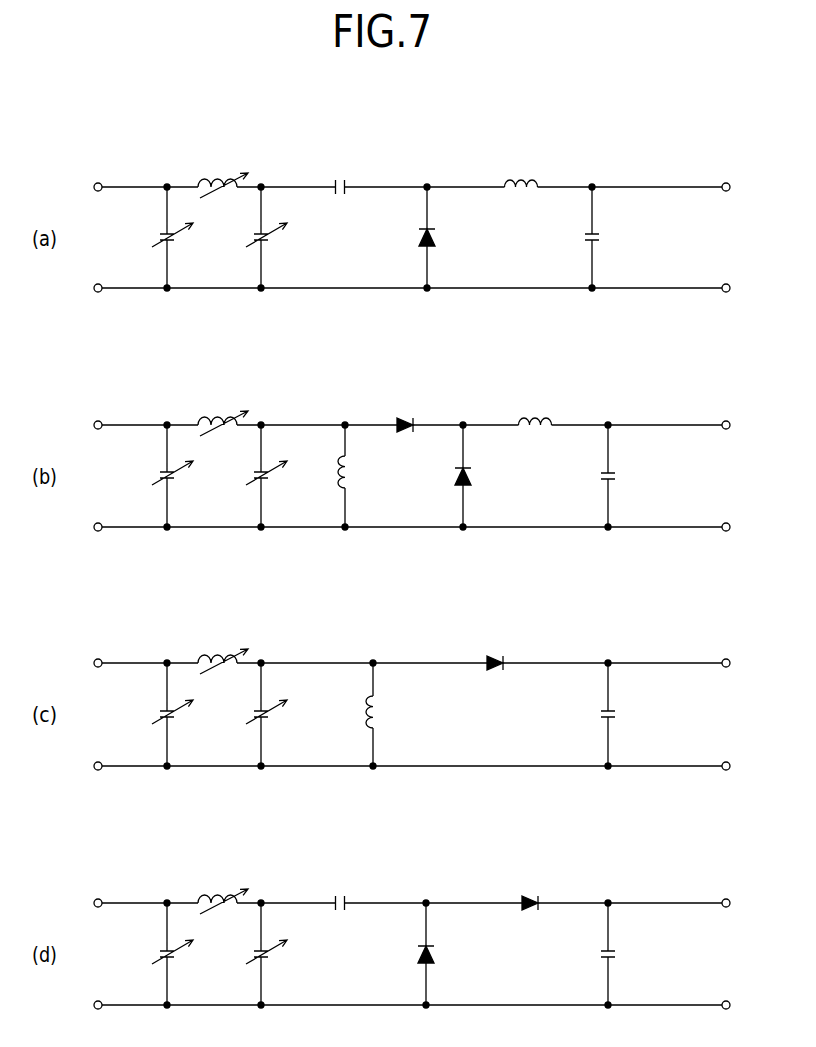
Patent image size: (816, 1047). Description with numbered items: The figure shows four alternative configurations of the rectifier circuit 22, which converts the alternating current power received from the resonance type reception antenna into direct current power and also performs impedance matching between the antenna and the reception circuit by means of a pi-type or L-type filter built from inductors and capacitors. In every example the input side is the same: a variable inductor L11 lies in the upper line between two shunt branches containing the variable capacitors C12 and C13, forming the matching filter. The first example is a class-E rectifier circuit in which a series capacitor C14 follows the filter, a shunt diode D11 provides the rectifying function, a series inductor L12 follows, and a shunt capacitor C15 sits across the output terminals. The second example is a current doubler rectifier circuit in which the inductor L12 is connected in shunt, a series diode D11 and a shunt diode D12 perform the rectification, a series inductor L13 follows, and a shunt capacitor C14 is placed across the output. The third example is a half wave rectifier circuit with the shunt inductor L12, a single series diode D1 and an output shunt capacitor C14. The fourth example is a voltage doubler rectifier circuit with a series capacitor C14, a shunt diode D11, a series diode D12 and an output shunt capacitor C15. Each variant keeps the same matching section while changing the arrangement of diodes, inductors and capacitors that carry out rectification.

The rectifier circuit 22 is at (142, 169).
The inductor L11 is at (223, 532).
The capacitor C12 is at (184, 596).
The capacitor C13 is at (278, 596).
The capacitor C14 is at (492, 530).
The diode D11 is at (424, 596).
The inductor L12 is at (438, 458).
The capacitor C15 is at (622, 596).
The inductor L13 is at (536, 407).
The diode D12 is at (502, 682).
The diode D1 is at (497, 678).